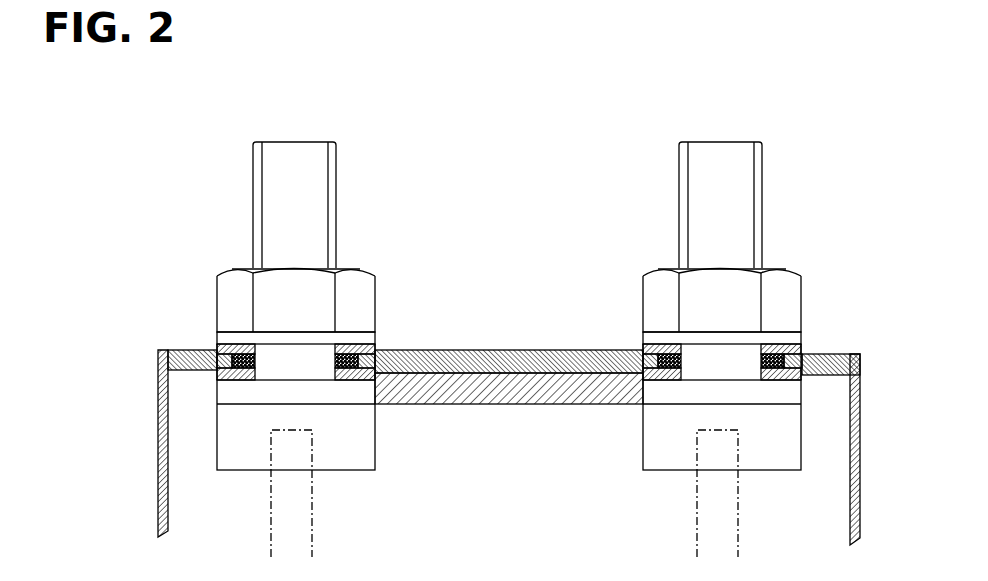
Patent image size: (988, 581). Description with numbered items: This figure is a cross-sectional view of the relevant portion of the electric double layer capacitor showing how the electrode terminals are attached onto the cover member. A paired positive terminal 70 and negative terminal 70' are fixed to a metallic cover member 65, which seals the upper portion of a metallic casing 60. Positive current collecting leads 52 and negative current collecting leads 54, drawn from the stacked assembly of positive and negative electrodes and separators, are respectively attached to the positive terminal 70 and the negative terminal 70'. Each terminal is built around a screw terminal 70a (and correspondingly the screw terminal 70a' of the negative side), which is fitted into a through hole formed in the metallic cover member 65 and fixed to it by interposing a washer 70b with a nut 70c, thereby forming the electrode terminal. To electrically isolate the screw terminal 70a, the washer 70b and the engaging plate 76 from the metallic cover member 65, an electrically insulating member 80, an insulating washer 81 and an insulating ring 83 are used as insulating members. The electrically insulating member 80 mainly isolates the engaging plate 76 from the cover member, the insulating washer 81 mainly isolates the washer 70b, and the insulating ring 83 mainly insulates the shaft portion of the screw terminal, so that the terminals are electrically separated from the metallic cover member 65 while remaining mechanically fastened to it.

The positive current collecting leads 52 is at (312, 540).
The negative current collecting leads 54 is at (740, 547).
The metallic casing 60 is at (160, 410).
The metallic cover member 65 is at (498, 358).
The positive terminal 70 is at (308, 221).
The screw terminal 70a is at (245, 200).
The washer 70b is at (360, 337).
The nut 70c is at (352, 288).
The negative terminal 70' is at (749, 231).
The screw terminal 70a' is at (686, 205).
The engaging plate 76 is at (330, 392).
The electrically insulating member 80 is at (527, 390).
The insulating washer 81 is at (340, 357).
The insulating ring 83 is at (348, 370).